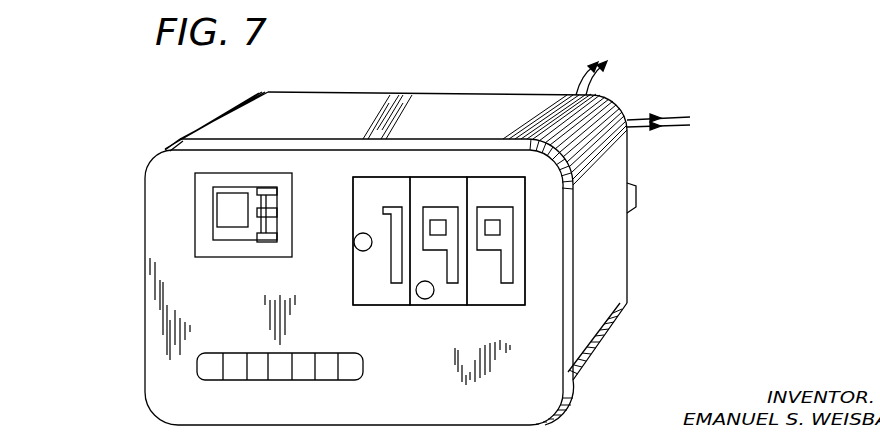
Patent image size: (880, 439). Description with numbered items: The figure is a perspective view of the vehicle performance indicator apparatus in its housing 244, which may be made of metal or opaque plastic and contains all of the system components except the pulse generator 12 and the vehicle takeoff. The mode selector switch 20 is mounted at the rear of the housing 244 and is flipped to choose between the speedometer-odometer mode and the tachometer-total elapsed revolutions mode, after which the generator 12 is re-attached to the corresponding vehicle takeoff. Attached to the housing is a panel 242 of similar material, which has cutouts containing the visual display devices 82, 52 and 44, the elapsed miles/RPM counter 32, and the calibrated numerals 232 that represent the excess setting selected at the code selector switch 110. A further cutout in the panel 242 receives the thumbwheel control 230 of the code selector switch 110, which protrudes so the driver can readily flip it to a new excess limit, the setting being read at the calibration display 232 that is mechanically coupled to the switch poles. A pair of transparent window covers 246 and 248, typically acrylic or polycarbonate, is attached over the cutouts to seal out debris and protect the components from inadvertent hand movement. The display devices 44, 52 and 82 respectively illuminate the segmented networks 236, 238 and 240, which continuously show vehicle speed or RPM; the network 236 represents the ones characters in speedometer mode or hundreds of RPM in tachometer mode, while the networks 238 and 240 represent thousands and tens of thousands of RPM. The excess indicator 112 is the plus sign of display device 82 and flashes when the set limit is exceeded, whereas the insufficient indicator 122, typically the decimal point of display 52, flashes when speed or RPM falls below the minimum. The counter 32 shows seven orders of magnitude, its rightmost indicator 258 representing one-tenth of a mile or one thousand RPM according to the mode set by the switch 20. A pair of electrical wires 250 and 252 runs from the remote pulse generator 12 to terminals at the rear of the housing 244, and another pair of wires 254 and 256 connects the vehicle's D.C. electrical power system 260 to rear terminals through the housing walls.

The code selector switch 110 is at (173, 205).
The thumbwheel control 230 is at (307, 172).
The calibrated numerals 232 is at (217, 200).
The excess indicator 112 is at (354, 244).
The insufficient indicator 122 is at (418, 292).
The segmented network 240 is at (383, 207).
The segmented network 238 is at (453, 208).
The segmented network 236 is at (513, 207).
The transparent window cover 246 is at (424, 232).
The numerical display device 82 is at (400, 181).
The numerical display device 52 is at (455, 181).
The numerical display device 44 is at (517, 181).
The transparent window cover 248 is at (186, 365).
The indicator 258 is at (357, 363).
The elapsed miles/RPM counter 32 is at (285, 376).
The panel 242 is at (566, 386).
The housing 244 is at (615, 305).
The electrical wire 250 is at (631, 118).
The electrical wire 252 is at (631, 128).
The wire 254 is at (589, 88).
The wire 256 is at (580, 80).
The D.C. electrical power system 260 is at (706, 71).
The pulse generator 12 is at (743, 119).
The mode selector switch 20 is at (631, 192).